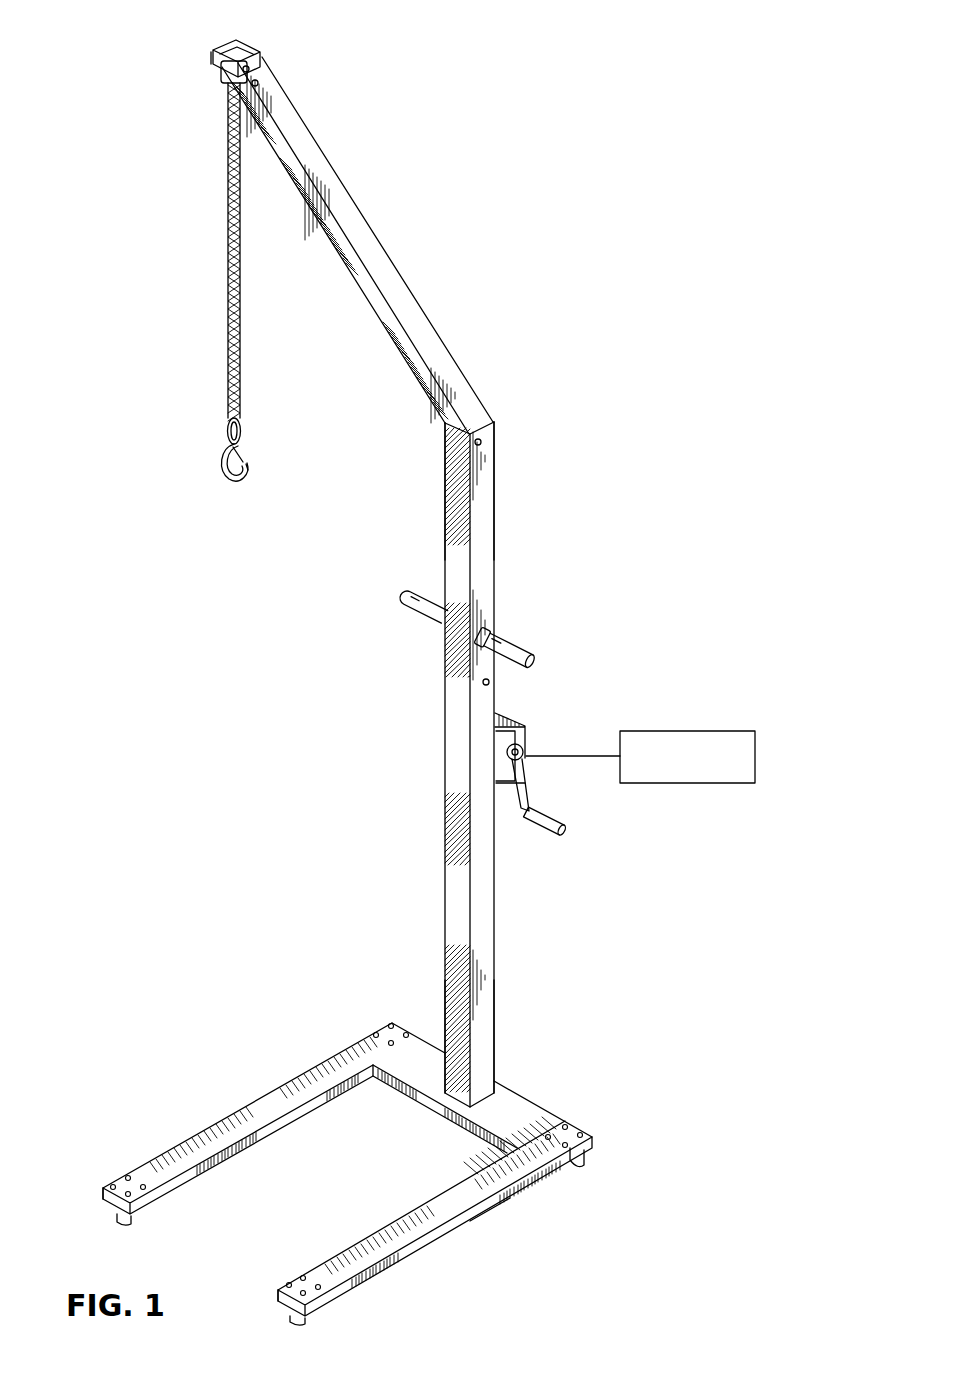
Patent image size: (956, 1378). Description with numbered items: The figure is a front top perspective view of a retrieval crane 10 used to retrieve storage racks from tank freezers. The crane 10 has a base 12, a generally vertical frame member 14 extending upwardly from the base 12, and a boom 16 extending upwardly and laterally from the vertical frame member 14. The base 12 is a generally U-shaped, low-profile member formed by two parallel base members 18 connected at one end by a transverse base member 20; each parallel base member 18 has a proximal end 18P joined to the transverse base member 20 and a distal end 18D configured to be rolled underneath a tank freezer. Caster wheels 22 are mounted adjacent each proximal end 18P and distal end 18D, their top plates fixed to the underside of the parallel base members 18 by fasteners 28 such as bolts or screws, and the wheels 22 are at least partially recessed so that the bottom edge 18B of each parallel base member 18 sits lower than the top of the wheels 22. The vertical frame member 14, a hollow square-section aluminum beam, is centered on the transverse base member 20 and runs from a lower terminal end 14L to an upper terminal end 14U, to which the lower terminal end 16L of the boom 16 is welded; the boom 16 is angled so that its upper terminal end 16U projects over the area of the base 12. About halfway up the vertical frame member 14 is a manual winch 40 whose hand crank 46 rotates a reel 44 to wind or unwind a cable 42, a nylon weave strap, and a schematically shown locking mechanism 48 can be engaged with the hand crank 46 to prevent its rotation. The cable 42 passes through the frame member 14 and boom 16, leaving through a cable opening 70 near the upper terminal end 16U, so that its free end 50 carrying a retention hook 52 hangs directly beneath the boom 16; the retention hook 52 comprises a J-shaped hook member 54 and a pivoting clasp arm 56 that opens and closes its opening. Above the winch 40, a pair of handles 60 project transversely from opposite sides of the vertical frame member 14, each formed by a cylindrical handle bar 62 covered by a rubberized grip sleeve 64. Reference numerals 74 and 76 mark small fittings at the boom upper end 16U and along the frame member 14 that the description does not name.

The retrieval crane 10 is at (481, 187).
The base 12 is at (553, 1105).
The vertical frame member 14 is at (497, 560).
The upper terminal end 14U is at (492, 449).
The lower terminal end 14L is at (495, 1075).
The boom 16 is at (406, 281).
The upper terminal end 16U is at (252, 46).
The lower terminal end 16L is at (492, 419).
The parallel base member 18 is at (222, 1114).
The proximal end 18P is at (410, 1024).
The distal end 18D is at (106, 1196).
The bottom edge 18B is at (490, 1204).
The transverse base member 20 is at (438, 1110).
The caster wheels 22 is at (574, 1162).
The fasteners 28 is at (383, 1027).
The manual winch 40 is at (523, 724).
The cable 42 is at (228, 207).
The reel 44 is at (526, 747).
The hand crank 46 is at (567, 826).
The locking mechanism 48 is at (680, 731).
The free end 50 is at (229, 412).
The retention hook 52 is at (250, 477).
The J-shaped hook member 54 is at (246, 457).
The clasp arm 56 is at (225, 459).
The handles 60 is at (523, 645).
The cylindrical handle bar 62 is at (486, 632).
The rubberized grip sleeve 64 is at (409, 600).
The cable opening 70 is at (223, 76).
The pin 74 is at (216, 56).
The bolts 76 is at (259, 83).